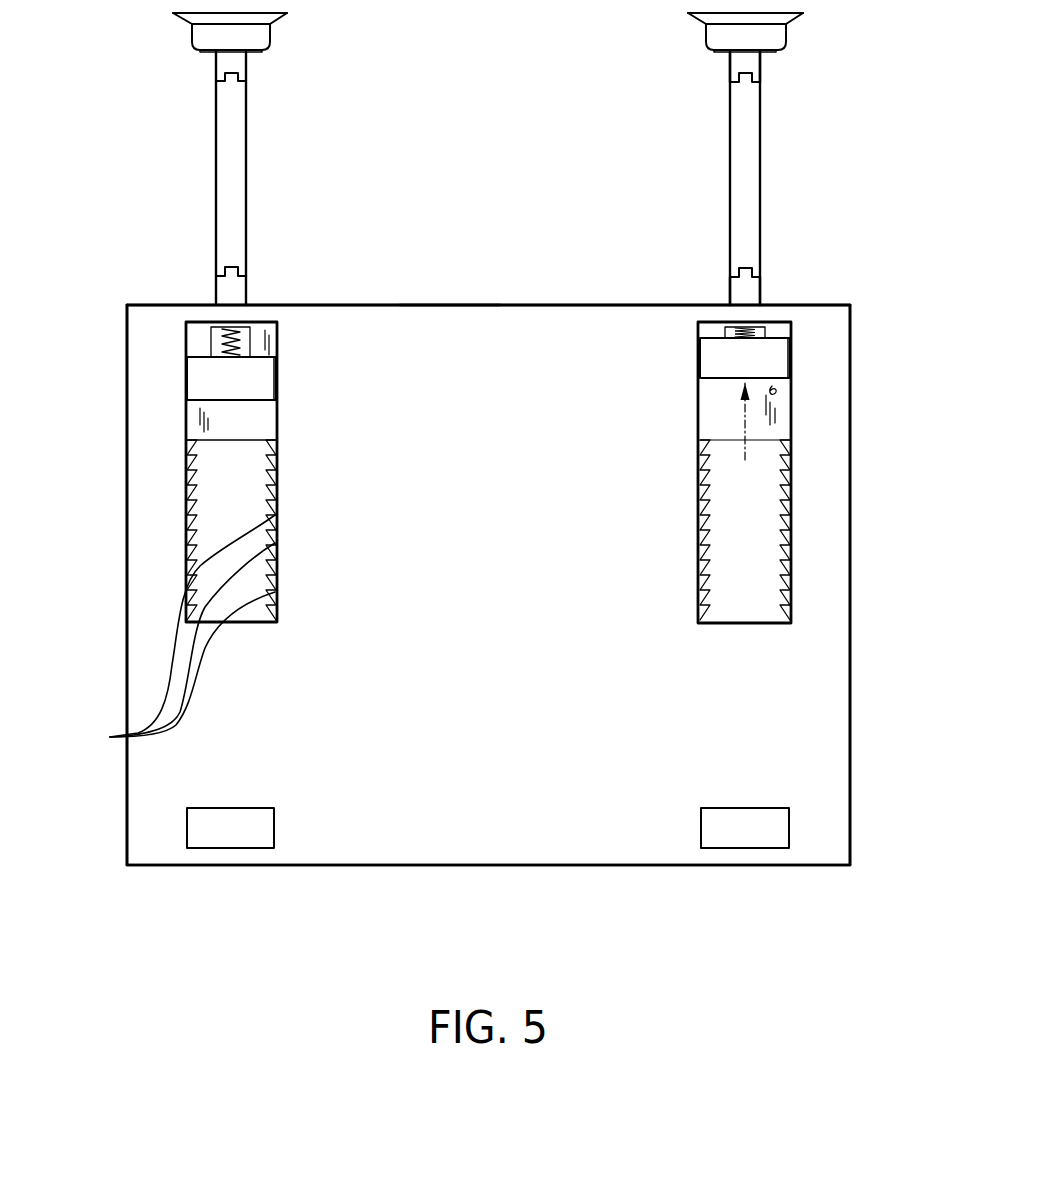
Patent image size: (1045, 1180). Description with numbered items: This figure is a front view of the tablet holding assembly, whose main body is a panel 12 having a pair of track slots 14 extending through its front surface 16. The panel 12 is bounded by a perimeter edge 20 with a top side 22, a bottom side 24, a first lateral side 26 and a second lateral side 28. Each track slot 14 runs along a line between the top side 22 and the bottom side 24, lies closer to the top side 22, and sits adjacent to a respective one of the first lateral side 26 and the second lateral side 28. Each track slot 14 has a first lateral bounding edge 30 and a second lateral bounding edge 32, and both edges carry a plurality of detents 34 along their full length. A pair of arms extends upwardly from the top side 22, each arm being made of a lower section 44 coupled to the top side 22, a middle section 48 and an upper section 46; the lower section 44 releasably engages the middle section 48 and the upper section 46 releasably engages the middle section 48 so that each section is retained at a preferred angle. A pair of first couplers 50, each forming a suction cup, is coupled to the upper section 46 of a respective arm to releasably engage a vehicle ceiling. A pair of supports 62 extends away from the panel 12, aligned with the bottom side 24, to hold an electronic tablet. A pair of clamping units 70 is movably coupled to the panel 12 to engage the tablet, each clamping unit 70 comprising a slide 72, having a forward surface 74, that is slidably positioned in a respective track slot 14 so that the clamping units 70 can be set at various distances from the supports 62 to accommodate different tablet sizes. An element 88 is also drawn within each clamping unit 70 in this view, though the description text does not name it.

The panel 12 is at (850, 315).
The track slots 14 is at (210, 506).
The front surface 16 is at (438, 371).
The perimeter edge 20 is at (523, 305).
The top side 22 is at (360, 305).
The bottom side 24 is at (417, 867).
The first lateral side 26 is at (127, 657).
The second lateral side 28 is at (850, 637).
The first lateral bounding edge 30 is at (188, 575).
The second lateral bounding edge 32 is at (275, 464).
The detents 34 is at (110, 737).
The lower section 44 is at (780, 285).
The upper section 46 is at (780, 68).
The middle section 48 is at (780, 172).
The first couplers 50 is at (272, 32).
The supports 62 is at (257, 849).
The clamping units 70 is at (158, 355).
The slide 72 is at (757, 442).
The forward surface 74 is at (775, 390).
The spring 88 is at (243, 344).